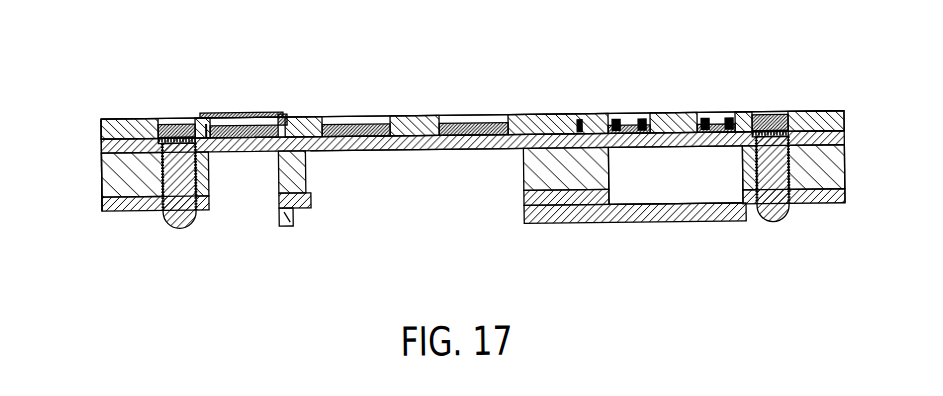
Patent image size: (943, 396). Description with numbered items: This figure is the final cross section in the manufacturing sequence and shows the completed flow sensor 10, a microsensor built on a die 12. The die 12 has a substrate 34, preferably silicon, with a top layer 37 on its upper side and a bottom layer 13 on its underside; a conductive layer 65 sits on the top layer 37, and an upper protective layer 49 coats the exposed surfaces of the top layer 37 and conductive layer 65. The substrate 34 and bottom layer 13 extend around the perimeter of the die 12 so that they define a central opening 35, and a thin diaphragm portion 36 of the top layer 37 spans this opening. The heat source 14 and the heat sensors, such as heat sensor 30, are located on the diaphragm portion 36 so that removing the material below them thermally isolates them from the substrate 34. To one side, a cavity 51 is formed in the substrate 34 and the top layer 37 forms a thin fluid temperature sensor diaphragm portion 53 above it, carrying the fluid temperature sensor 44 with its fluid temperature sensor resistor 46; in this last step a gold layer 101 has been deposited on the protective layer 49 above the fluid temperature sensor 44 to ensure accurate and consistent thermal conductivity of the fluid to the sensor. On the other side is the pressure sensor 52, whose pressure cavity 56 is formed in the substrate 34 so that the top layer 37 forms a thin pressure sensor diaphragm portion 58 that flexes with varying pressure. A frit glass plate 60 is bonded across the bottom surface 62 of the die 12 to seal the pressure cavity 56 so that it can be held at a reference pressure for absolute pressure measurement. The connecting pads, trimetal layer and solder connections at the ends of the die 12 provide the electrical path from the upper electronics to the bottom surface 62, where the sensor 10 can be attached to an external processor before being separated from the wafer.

The flow sensor 10 is at (442, 204).
The die 12 is at (102, 185).
The bottom layer 13 is at (845, 201).
The heat source 14 is at (484, 123).
The heat sensor 30 is at (362, 123).
The substrate 34 is at (843, 177).
The central opening 35 is at (506, 216).
The diaphragm portion 36 is at (392, 149).
The top layer 37 is at (848, 138).
The fluid temperature sensor 44 is at (241, 122).
The fluid temperature sensor resistor 46 is at (282, 112).
The upper protective layer 49 is at (125, 117).
The cavity 51 is at (268, 219).
The pressure sensor 52 is at (673, 72).
The fluid temperature sensor diaphragm portion 53 is at (239, 144).
The pressure cavity 56 is at (676, 236).
The pressure sensor diaphragm portion 58 is at (648, 150).
The plate 60 is at (567, 225).
The bottom surface 62 is at (107, 208).
The conductive layer 65 is at (90, 120).
The gold layer 101 is at (208, 110).